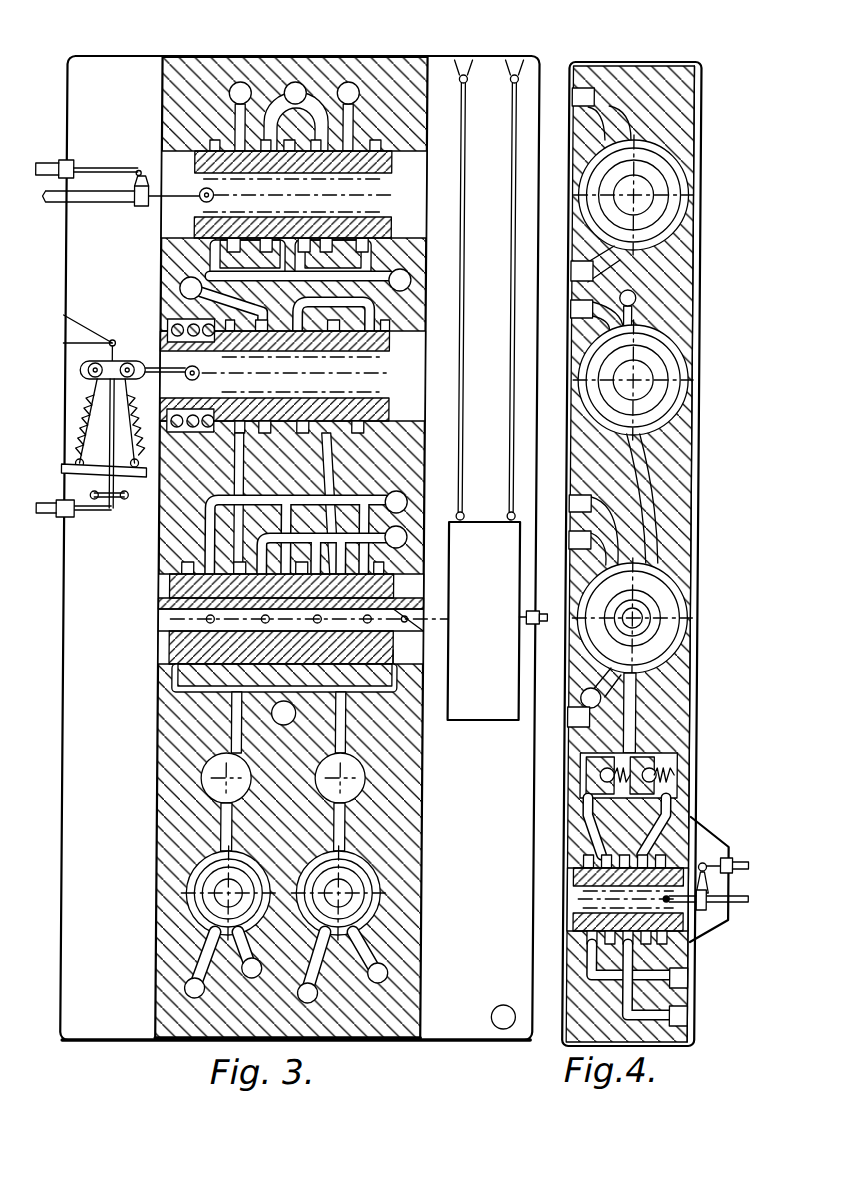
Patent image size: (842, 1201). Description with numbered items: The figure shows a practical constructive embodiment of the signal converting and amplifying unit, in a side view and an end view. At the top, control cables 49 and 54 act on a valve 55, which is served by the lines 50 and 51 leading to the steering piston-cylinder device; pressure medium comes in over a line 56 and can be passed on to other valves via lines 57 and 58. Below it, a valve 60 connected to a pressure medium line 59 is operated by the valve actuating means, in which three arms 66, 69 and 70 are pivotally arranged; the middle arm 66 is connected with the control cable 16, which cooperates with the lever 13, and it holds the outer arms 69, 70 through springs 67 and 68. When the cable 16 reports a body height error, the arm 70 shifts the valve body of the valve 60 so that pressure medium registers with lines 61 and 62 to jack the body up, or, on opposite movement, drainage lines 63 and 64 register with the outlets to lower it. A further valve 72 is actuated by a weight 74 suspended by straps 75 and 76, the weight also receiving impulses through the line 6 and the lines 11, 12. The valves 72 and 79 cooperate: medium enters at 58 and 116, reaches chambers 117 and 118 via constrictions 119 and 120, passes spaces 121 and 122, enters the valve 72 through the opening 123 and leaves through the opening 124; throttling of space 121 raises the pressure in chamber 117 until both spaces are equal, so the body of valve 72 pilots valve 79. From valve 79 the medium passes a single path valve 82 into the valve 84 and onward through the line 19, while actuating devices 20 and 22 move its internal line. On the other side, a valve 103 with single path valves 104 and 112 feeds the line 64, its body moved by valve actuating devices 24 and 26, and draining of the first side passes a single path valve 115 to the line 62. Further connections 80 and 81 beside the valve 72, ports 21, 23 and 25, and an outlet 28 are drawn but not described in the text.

In FIG. 3, the line 6 is at (512, 694).
In FIG. 3, the line 11 is at (512, 694).
In FIG. 3, the line 12 is at (552, 628).
In FIG. 3, the lever 13 is at (433, 613).
In FIG. 3, the control cable 16 is at (60, 520).
In FIG. 3, the line 19 is at (250, 978).
In FIG. 4, the line 19 is at (674, 969).
In FIG. 4, the actuating device 20 is at (715, 892).
In FIG. 3, the port 21 is at (190, 993).
In FIG. 4, the port 21 is at (692, 988).
In FIG. 4, the actuating device 22 is at (730, 842).
In FIG. 3, the port 23 is at (395, 978).
In FIG. 4, the port 23 is at (696, 978).
In FIG. 4, the valve actuating device 24 is at (744, 908).
In FIG. 3, the port 25 is at (318, 1004).
In FIG. 4, the port 25 is at (696, 1016).
In FIG. 4, the actuating device 26 is at (745, 858).
In FIG. 3, the outlet 28 is at (509, 1031).
In FIG. 3, the control cable 49 is at (61, 162).
In FIG. 3, the line 50 is at (238, 84).
In FIG. 4, the line 50 is at (610, 83).
In FIG. 3, the line 51 is at (353, 84).
In FIG. 4, the line 51 is at (573, 95).
In FIG. 3, the control cable 54 is at (63, 206).
In FIG. 3, the valve 55 is at (424, 171).
In FIG. 4, the valve 55 is at (692, 196).
In FIG. 3, the line 56 is at (413, 283).
In FIG. 4, the line 56 is at (574, 270).
In FIG. 3, the line 57 is at (299, 84).
In FIG. 4, the line 57 is at (610, 83).
In FIG. 3, the line 58 is at (302, 713).
In FIG. 4, the line 58 is at (574, 718).
In FIG. 3, the pressure medium line 59 is at (183, 287).
In FIG. 4, the pressure medium line 59 is at (574, 306).
In FIG. 3, the valve 60 is at (421, 395).
In FIG. 4, the valve 60 is at (672, 365).
In FIG. 3, the line 61 is at (236, 462).
In FIG. 4, the line 61 is at (696, 498).
In FIG. 3, the line 62 is at (236, 746).
In FIG. 4, the line 62 is at (666, 655).
In FIG. 3, the drainage line 63 is at (343, 455).
In FIG. 4, the drainage line 63 is at (652, 488).
In FIG. 3, the drainage line 64 is at (352, 749).
In FIG. 4, the drainage line 64 is at (630, 690).
In FIG. 3, the arm 66 is at (138, 342).
In FIG. 3, the spring 67 is at (94, 494).
In FIG. 3, the spring 68 is at (113, 509).
In FIG. 3, the arm 69 is at (93, 412).
In FIG. 3, the arm 70 is at (125, 400).
In FIG. 3, the valve 72 is at (260, 629).
In FIG. 3, the weight 74 is at (483, 530).
In FIG. 3, the strap 75 is at (467, 236).
In FIG. 3, the strap 76 is at (513, 290).
In FIG. 3, the valve 79 is at (181, 654).
In FIG. 3, the port 80 is at (411, 497).
In FIG. 4, the port 80 is at (574, 500).
In FIG. 3, the port 81 is at (411, 529).
In FIG. 4, the port 81 is at (574, 538).
In FIG. 3, the single path valve 82 is at (163, 802).
In FIG. 4, the single path valve 82 is at (680, 748).
In FIG. 3, the valve 84 is at (196, 897).
In FIG. 4, the valve 84 is at (574, 910).
In FIG. 3, the valve 103 is at (389, 898).
In FIG. 4, the valve 103 is at (578, 904).
In FIG. 3, the single path valve 104 is at (410, 802).
In FIG. 4, the single path valve 104 is at (680, 748).
In FIG. 3, the single path valve 112 is at (372, 792).
In FIG. 4, the single path valve 112 is at (683, 757).
In FIG. 3, the single path valve 115 is at (217, 793).
In FIG. 4, the single path valve 115 is at (680, 748).
In FIG. 3, the entry 116 is at (178, 700).
In FIG. 3, the chamber 117 is at (172, 651).
In FIG. 3, the chamber 118 is at (430, 628).
In FIG. 3, the constriction 119 is at (178, 684).
In FIG. 3, the constriction 120 is at (401, 684).
In FIG. 3, the space 121 is at (179, 577).
In FIG. 3, the space 122 is at (416, 566).
In FIG. 3, the opening 123 is at (177, 563).
In FIG. 3, the opening 124 is at (173, 623).